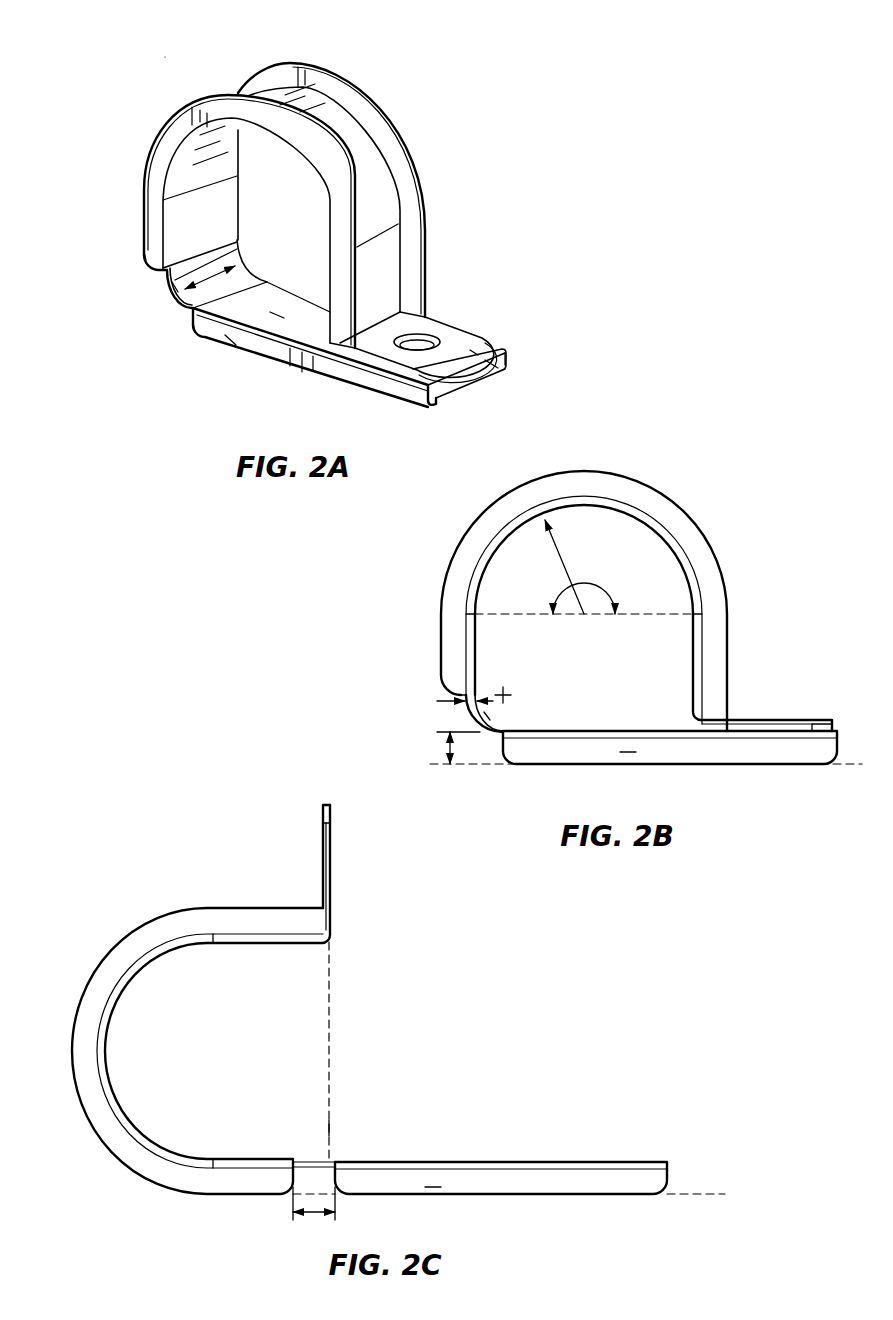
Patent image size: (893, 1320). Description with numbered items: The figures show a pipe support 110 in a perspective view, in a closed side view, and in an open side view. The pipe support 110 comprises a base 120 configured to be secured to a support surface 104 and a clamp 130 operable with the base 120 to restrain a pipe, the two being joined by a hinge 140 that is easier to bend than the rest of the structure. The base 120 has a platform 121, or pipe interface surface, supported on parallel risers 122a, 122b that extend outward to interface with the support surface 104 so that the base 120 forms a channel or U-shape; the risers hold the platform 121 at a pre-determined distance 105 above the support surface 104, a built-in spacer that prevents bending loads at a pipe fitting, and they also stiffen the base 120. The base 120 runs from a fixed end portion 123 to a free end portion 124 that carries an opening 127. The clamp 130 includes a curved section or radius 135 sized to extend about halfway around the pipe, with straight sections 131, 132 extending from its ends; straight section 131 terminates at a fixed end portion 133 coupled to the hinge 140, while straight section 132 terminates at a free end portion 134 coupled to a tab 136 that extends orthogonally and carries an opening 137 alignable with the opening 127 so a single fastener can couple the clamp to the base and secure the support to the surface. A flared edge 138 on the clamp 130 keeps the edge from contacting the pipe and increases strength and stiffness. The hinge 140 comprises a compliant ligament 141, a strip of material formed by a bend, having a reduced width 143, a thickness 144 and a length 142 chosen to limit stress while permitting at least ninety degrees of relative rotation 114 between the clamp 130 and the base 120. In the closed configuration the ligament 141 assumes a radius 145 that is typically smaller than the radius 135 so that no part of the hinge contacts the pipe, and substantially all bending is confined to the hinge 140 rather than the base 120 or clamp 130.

In FIG. 2A, the pipe support 110 is at (165, 57).
In FIG. 2A, the base 120 is at (298, 389).
In FIG. 2B, the base 120 is at (684, 768).
In FIG. 2C, the base 120 is at (515, 1197).
In FIG. 2A, the platform 121 is at (277, 315).
In FIG. 2B, the platform 121 is at (598, 729).
In FIG. 2C, the platform 121 is at (447, 1160).
In FIG. 2A, the riser 122a is at (230, 340).
In FIG. 2B, the riser 122a is at (628, 753).
In FIG. 2C, the riser 122a is at (433, 1187).
In FIG. 2A, the riser 122b is at (491, 368).
In FIG. 2A, the fixed end portion of the base 123 is at (182, 336).
In FIG. 2A, the free end portion of the base 124 is at (503, 338).
In FIG. 2A, the opening 127 is at (427, 337).
In FIG. 2A, the clamp 130 is at (375, 82).
In FIG. 2B, the clamp 130 is at (608, 466).
In FIG. 2C, the clamp 130 is at (103, 940).
In FIG. 2B, the straight section 131 is at (477, 648).
In FIG. 2C, the straight section 131 is at (238, 1160).
In FIG. 2B, the straight section 132 is at (691, 652).
In FIG. 2C, the straight section 132 is at (247, 943).
In FIG. 2A, the fixed end portion of the clamp 133 is at (133, 259).
In FIG. 2A, the free end portion of the clamp 134 is at (459, 297).
In FIG. 2B, the radius 135 is at (560, 543).
In FIG. 2A, the tab 136 is at (468, 342).
In FIG. 2B, the tab 136 is at (777, 719).
In FIG. 2C, the tab 136 is at (322, 853).
In FIG. 2A, the opening 137 is at (405, 329).
In FIG. 2A, the flared edge 138 is at (172, 137).
In FIG. 2A, the hinge 140 is at (152, 287).
In FIG. 2B, the hinge 140 is at (457, 717).
In FIG. 2A, the compliant ligament 141 is at (170, 296).
In FIG. 2A, the reduced width 143 is at (213, 268).
In FIG. 2B, the thickness 144 is at (437, 692).
In FIG. 2B, the radius 145 is at (488, 717).
In FIG. 2B, the support surface 104 is at (481, 767).
In FIG. 2B, the pre-determined distance 105 is at (449, 748).
In FIG. 2C, the relative rotation 114 is at (365, 1158).
In FIG. 2C, the length 142 is at (315, 1214).